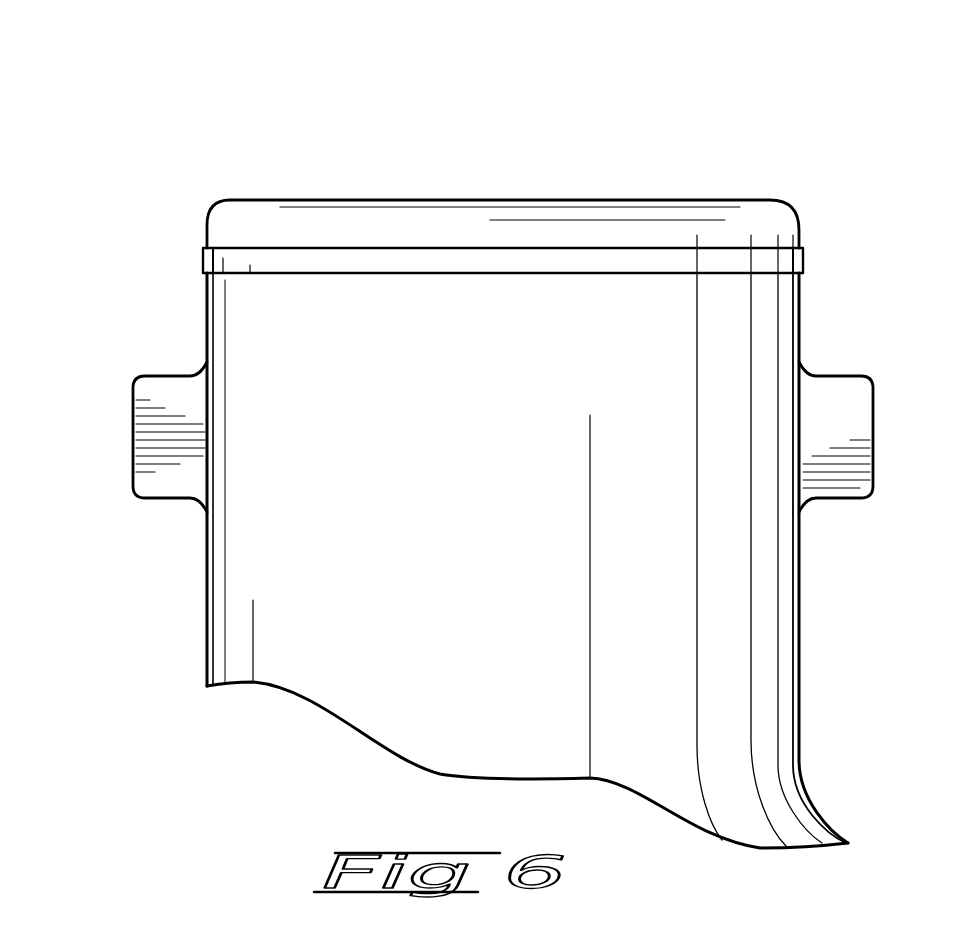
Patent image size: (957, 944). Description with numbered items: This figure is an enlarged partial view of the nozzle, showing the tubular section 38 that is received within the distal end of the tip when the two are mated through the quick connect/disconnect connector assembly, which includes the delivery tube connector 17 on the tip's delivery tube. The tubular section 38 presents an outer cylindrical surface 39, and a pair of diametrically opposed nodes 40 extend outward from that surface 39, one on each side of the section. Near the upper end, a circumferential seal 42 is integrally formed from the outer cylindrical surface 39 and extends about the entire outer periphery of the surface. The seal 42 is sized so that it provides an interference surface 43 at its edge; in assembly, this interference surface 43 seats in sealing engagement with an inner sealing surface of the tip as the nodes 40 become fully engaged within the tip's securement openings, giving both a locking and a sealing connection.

The delivery tube connector 17 is at (158, 162).
The tubular section 38 is at (684, 158).
The outer cylindrical surface 39 is at (800, 640).
The nodes 40 is at (165, 498).
The circumferential seal 42 is at (390, 285).
The interference surface 43 is at (203, 260).